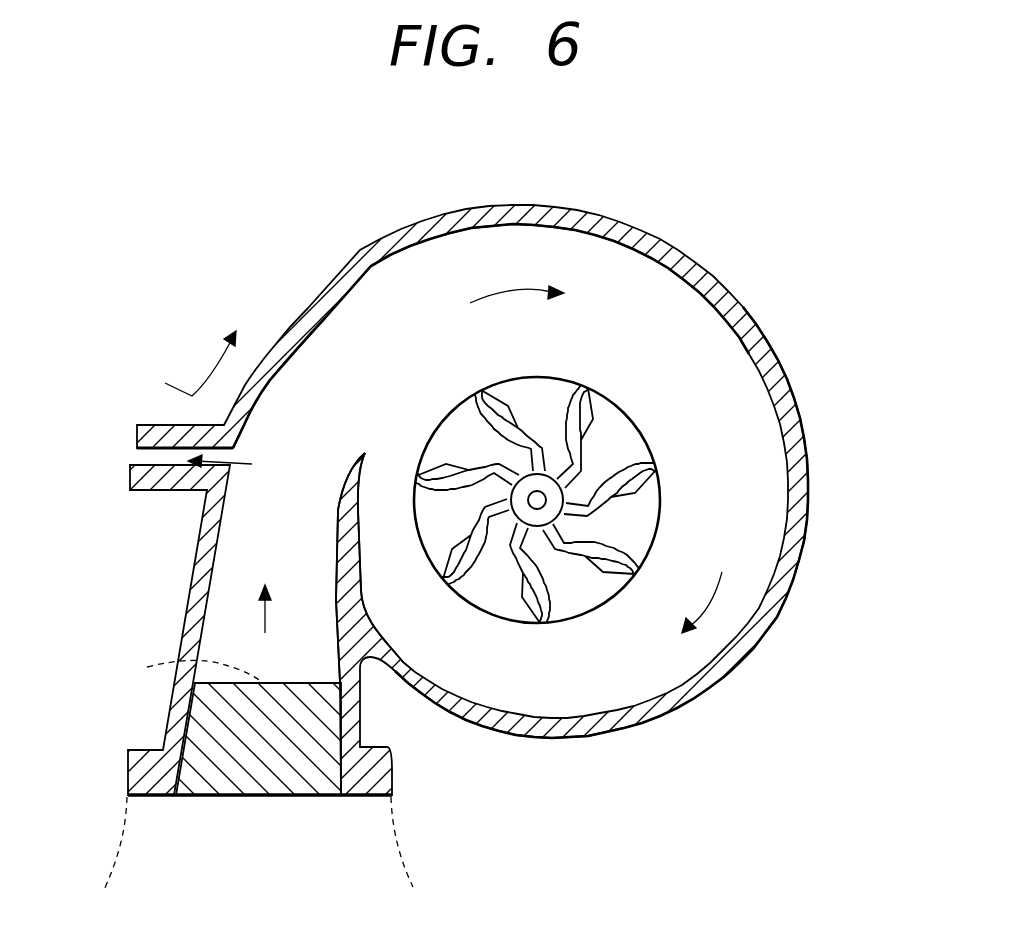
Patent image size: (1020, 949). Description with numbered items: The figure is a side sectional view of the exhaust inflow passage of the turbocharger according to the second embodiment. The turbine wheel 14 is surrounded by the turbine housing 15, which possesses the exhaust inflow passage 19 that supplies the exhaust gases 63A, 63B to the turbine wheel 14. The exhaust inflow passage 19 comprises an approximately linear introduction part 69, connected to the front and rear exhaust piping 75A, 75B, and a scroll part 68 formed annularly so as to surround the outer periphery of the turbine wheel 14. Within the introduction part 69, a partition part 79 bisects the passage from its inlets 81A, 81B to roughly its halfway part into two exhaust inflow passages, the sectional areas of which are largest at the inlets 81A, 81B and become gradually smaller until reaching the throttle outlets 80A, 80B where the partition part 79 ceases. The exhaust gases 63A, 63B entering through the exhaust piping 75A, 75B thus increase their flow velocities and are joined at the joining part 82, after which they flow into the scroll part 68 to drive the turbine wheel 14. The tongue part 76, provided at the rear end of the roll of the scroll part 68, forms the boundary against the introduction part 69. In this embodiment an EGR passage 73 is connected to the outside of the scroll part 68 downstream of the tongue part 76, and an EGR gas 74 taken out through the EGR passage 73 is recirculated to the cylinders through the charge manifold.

The turbine wheel 14 is at (641, 487).
The turbine housing 15 is at (657, 247).
The exhaust inflow passage 19 is at (380, 296).
The exhaust gas 63A is at (688, 392).
The exhaust gas 63B is at (513, 292).
The scroll part 68 is at (210, 368).
The introduction part 69 is at (125, 435).
The EGR passage 73 is at (160, 492).
The EGR gas 74 is at (250, 464).
The front exhaust piping 75A is at (350, 845).
The rear exhaust piping 75B is at (412, 880).
The tongue part 76 is at (362, 455).
The partition part 79 is at (313, 733).
The throttle outlet 80A is at (176, 682).
The throttle outlet 80B is at (176, 682).
The inlet 81A is at (260, 846).
The inlet 81B is at (272, 797).
The joining part 82 is at (262, 660).